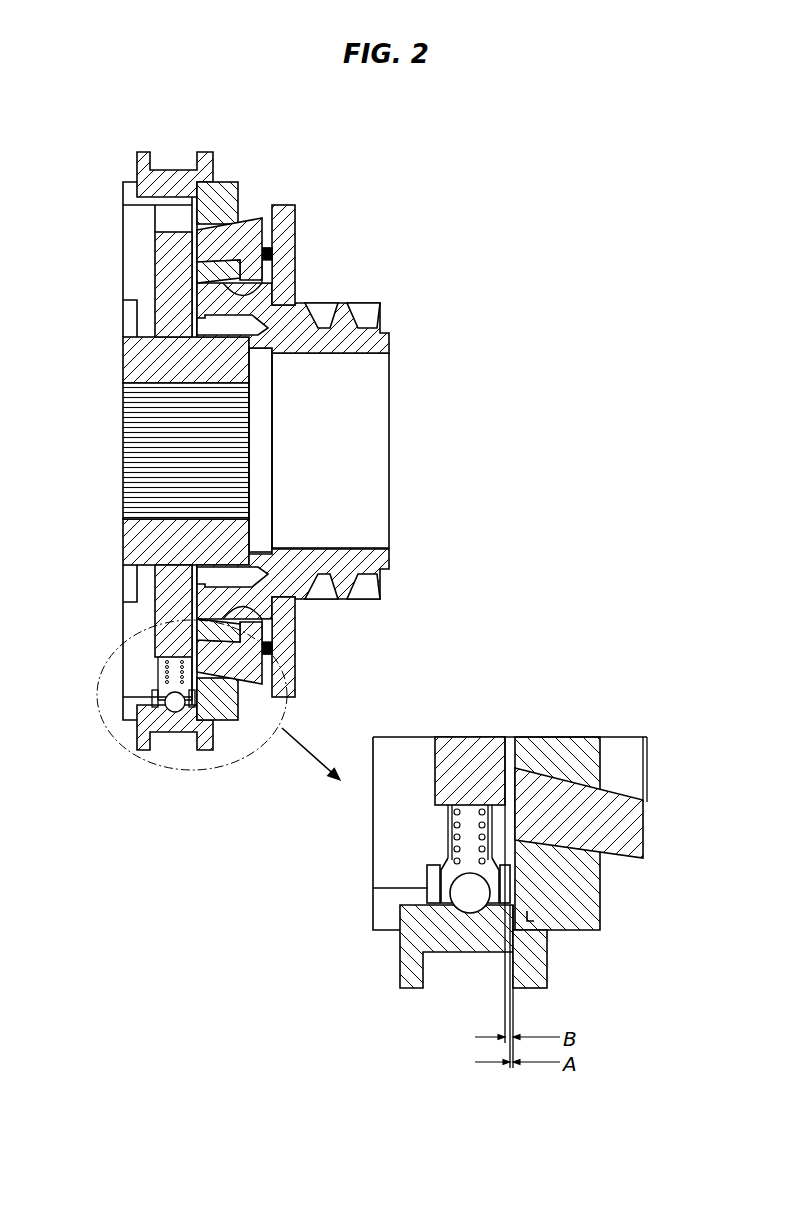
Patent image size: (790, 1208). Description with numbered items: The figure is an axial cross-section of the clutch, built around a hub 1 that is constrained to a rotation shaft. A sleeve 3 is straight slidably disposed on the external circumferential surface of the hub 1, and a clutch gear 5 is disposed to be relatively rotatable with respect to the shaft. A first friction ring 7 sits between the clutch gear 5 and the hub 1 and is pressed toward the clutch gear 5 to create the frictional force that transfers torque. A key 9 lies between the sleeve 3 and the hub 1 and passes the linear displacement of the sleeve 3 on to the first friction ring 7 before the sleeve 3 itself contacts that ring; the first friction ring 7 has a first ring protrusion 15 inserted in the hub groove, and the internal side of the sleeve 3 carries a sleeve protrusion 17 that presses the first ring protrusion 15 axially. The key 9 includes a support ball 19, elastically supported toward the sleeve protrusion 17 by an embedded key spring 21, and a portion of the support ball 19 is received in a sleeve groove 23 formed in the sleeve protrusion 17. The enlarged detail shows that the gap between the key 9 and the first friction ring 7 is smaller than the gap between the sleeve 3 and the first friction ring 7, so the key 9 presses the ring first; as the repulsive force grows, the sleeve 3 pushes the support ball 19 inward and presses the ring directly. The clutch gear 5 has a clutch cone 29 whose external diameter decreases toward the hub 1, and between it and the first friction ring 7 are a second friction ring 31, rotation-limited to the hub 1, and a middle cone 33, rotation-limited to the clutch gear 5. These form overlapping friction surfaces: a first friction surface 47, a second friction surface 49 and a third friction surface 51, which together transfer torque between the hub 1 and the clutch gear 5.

The hub 1 is at (130, 362).
The sleeve 3 is at (203, 152).
The clutch gear 5 is at (360, 318).
The first friction ring 7 is at (233, 188).
The key 9 is at (397, 914).
The first ring protrusion 15 is at (547, 930).
The sleeve protrusion 17 is at (532, 918).
The support ball 19 is at (432, 890).
The key spring 21 is at (452, 830).
The sleeve groove 23 is at (488, 910).
The clutch cone 29 is at (212, 303).
The second friction ring 31 is at (235, 300).
The middle cone 33 is at (245, 228).
The first friction surface 47 is at (195, 275).
The second friction surface 49 is at (225, 268).
The third friction surface 51 is at (190, 252).